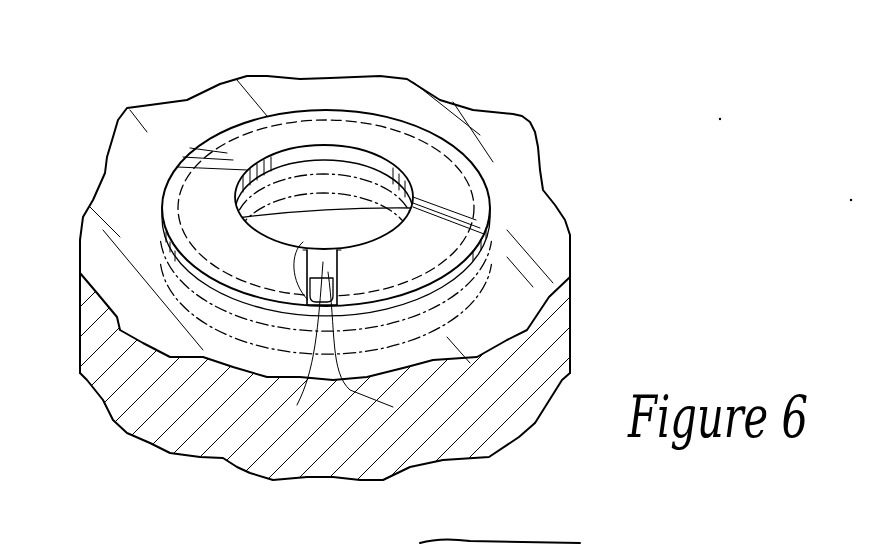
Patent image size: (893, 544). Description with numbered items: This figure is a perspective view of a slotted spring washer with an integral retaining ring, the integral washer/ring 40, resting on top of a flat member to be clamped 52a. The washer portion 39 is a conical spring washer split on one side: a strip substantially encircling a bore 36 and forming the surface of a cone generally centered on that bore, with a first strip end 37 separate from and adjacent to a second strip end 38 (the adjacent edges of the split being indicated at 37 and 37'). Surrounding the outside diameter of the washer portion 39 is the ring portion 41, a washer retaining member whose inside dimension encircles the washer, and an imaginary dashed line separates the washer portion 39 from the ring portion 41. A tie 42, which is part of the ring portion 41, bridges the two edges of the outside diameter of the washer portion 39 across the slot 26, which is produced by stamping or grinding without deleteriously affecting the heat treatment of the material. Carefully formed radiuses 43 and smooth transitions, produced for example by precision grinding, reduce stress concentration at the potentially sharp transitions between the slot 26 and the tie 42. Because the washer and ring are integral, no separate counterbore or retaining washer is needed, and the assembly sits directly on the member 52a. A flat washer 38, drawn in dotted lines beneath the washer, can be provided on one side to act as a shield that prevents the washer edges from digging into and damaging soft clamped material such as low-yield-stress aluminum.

The flat member to be clamped 52a is at (86, 121).
The bore 36 is at (325, 148).
The washer portion 39 is at (392, 143).
The integral washer/ring 40 is at (489, 186).
The ring portion 41 is at (468, 150).
The first strip end 37 is at (383, 259).
The slot side edge 37' is at (258, 252).
The radiuses 43 is at (303, 242).
The tie 42 is at (369, 345).
The slot 26 is at (291, 340).
The flat washer 38 is at (443, 313).